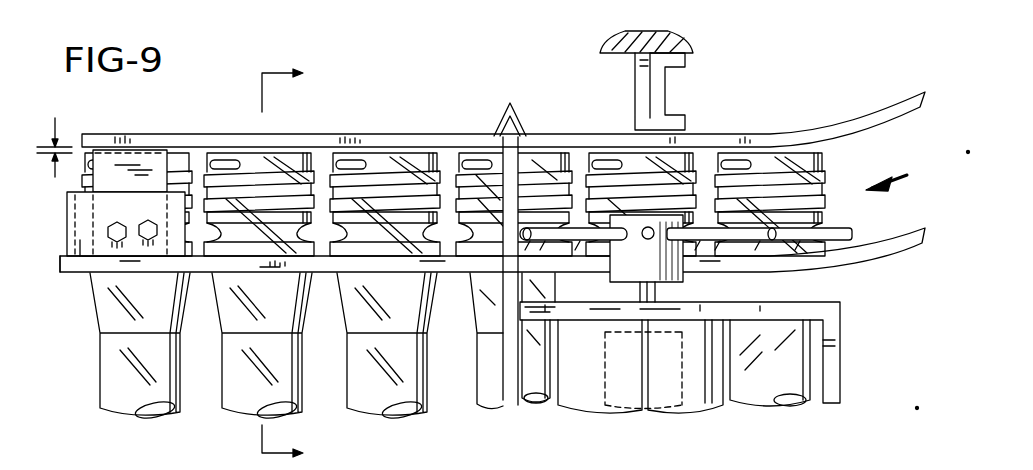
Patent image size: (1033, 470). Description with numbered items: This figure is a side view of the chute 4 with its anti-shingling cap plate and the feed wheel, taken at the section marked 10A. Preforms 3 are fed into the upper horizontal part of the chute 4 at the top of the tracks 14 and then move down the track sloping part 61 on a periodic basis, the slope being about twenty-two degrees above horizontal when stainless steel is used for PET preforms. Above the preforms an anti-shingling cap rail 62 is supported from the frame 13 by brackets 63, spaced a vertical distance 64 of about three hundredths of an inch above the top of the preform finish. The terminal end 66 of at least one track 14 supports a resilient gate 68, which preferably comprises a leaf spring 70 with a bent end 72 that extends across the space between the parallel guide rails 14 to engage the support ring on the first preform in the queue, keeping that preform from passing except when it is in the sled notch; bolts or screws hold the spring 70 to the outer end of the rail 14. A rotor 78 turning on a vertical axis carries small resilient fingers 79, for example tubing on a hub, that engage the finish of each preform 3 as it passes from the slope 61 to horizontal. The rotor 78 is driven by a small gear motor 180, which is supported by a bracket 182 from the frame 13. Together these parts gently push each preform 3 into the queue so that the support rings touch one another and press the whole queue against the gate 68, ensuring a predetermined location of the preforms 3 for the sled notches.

The preform 3 is at (235, 373).
The chute 4 is at (789, 115).
The section line 10A is at (314, 262).
The frame 13 is at (612, 46).
The track 14 is at (448, 263).
The track sloping part 61 is at (892, 233).
The anti-shingling cap rail 62 is at (509, 240).
The bracket 63 is at (634, 87).
The vertical distance 64 is at (54, 130).
The terminal end 66 is at (62, 267).
The resilient gate 68 is at (82, 262).
The leaf spring 70 is at (98, 222).
The bent end 72 is at (67, 215).
The rotor 78 is at (644, 275).
The resilient finger 79 is at (705, 241).
The gear motor 180 is at (632, 405).
The bracket 182 is at (833, 398).